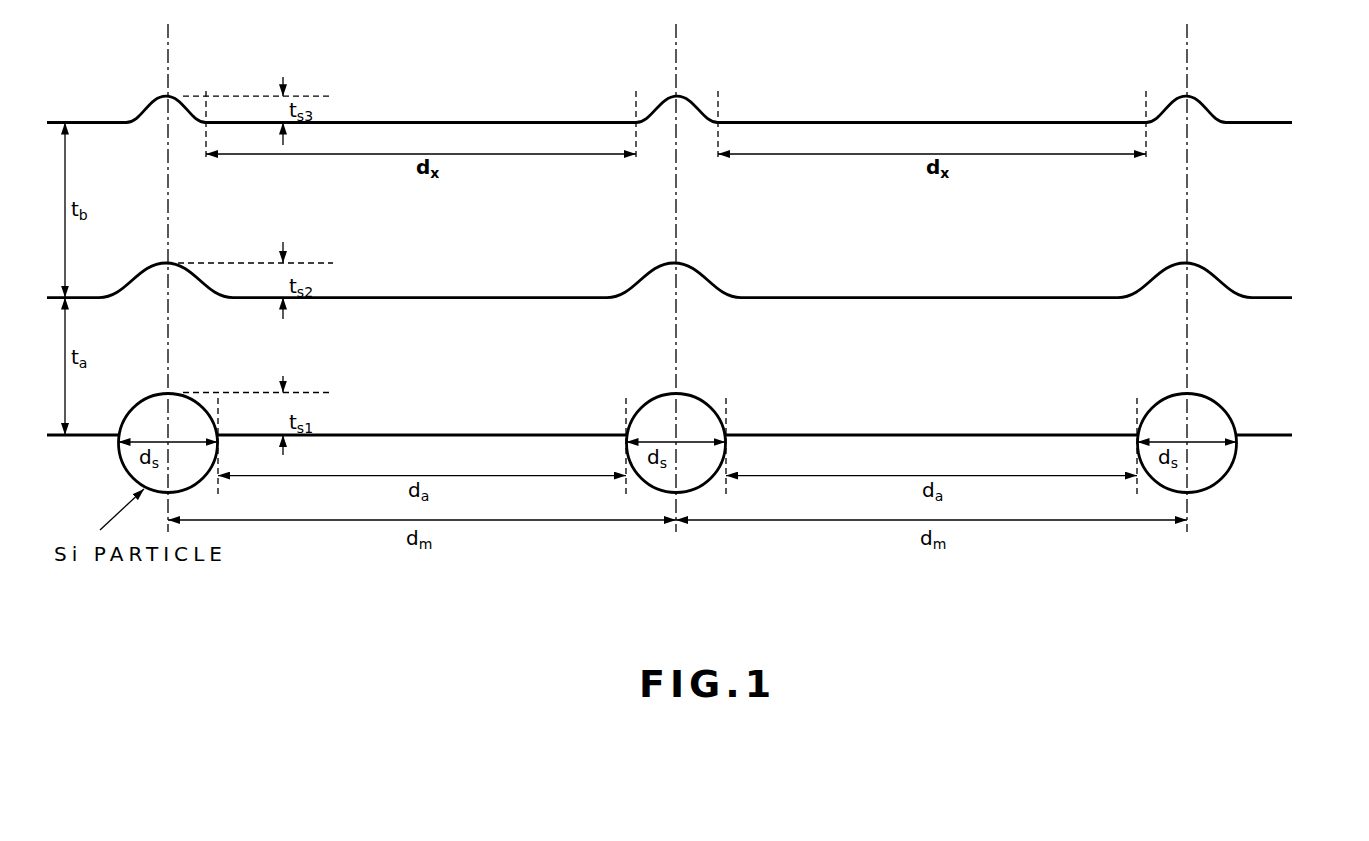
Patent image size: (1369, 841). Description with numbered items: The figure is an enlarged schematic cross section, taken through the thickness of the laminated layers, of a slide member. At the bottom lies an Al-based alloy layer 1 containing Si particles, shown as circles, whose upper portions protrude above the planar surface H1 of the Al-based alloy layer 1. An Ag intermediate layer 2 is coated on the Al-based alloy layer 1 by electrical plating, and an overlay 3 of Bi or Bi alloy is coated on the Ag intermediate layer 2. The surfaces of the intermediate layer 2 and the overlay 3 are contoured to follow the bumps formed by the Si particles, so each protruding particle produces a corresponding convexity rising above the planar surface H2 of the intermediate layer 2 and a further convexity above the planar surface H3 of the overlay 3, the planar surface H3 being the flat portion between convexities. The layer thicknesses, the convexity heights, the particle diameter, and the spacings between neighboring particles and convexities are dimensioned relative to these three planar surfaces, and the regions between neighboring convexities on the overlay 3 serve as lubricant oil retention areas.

The Al-based alloy layer 1 is at (1289, 427).
The Ag intermediate layer 2 is at (1289, 290).
The overlay 3 is at (1289, 114).
The planar surface of the Al-based alloy layer H1 is at (455, 425).
The planar surface of the intermediate layer H2 is at (455, 288).
The planar surface of the overlay H3 is at (455, 112).